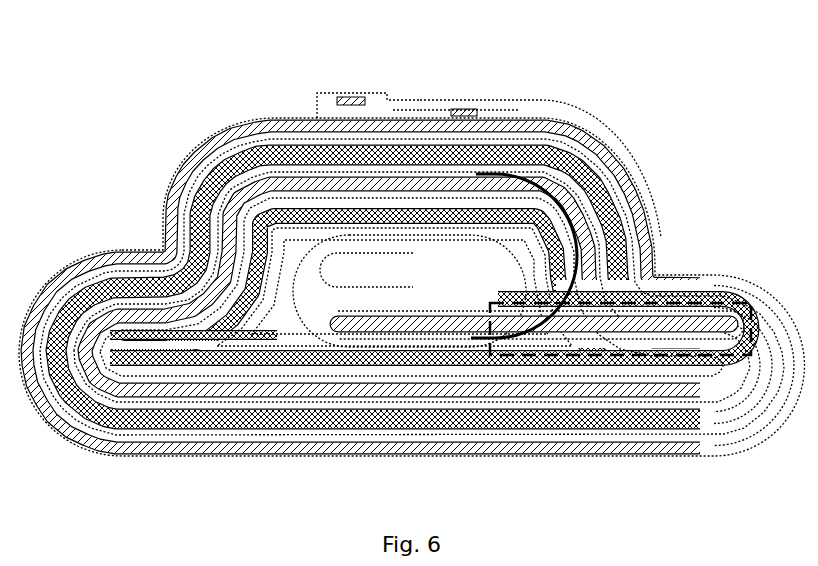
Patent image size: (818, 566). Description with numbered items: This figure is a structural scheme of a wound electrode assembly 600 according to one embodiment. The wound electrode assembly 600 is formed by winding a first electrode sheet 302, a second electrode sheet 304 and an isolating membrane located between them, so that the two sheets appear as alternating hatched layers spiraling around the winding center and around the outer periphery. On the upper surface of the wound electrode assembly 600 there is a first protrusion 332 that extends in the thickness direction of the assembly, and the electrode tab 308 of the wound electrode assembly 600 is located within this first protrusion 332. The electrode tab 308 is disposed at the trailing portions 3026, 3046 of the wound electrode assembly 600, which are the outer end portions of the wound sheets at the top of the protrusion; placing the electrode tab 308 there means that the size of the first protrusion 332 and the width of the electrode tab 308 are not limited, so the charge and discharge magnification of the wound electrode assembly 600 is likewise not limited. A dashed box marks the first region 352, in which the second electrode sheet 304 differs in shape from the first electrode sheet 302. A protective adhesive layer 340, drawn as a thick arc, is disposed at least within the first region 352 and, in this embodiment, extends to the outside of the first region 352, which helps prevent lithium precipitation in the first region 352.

The wound electrode assembly 600 is at (137, 68).
The first protrusion 332 is at (173, 193).
The electrode tab 308 is at (463, 113).
The trailing portion 3026 is at (393, 100).
The trailing portion 3046 is at (496, 118).
The first electrode sheet 302 is at (492, 300).
The second electrode sheet 304 is at (585, 310).
The protective adhesive layer 340 is at (525, 333).
The first region 352 is at (615, 355).